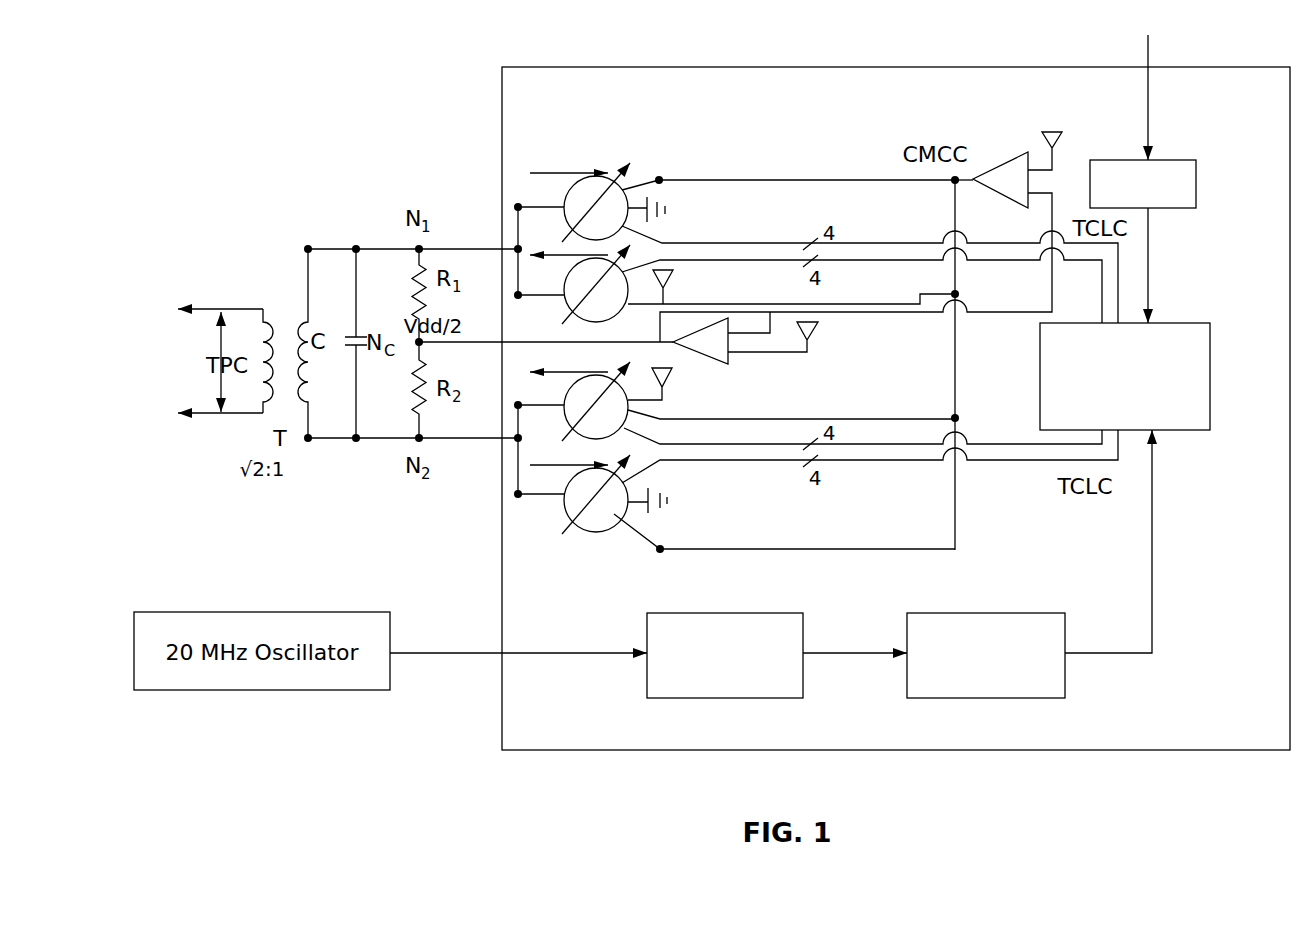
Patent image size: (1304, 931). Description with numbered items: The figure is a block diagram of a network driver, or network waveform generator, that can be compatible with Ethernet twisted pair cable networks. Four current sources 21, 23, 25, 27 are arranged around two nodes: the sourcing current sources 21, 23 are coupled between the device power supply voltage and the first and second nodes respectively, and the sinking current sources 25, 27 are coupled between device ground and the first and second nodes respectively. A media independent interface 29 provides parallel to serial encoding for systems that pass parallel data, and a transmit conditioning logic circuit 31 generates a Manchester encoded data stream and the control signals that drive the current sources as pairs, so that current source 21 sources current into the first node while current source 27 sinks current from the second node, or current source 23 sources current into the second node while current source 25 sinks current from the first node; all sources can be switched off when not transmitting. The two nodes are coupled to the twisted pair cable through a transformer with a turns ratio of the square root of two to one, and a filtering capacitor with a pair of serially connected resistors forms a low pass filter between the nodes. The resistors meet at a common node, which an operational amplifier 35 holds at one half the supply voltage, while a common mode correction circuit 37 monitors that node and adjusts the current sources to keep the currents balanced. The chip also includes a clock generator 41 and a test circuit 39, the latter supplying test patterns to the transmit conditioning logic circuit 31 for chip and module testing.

The sourcing current source 21 is at (563, 302).
The sourcing current source 23 is at (566, 393).
The sinking current source 25 is at (562, 198).
The sinking current source 27 is at (566, 508).
The media independent interface 29 is at (1196, 176).
The transmit conditioning logic circuit 31 is at (1211, 328).
The operational amplifier 35 is at (730, 362).
The common mode correction circuit 37 is at (1007, 162).
The test circuit 39 is at (1000, 698).
The clock generator 41 is at (722, 698).